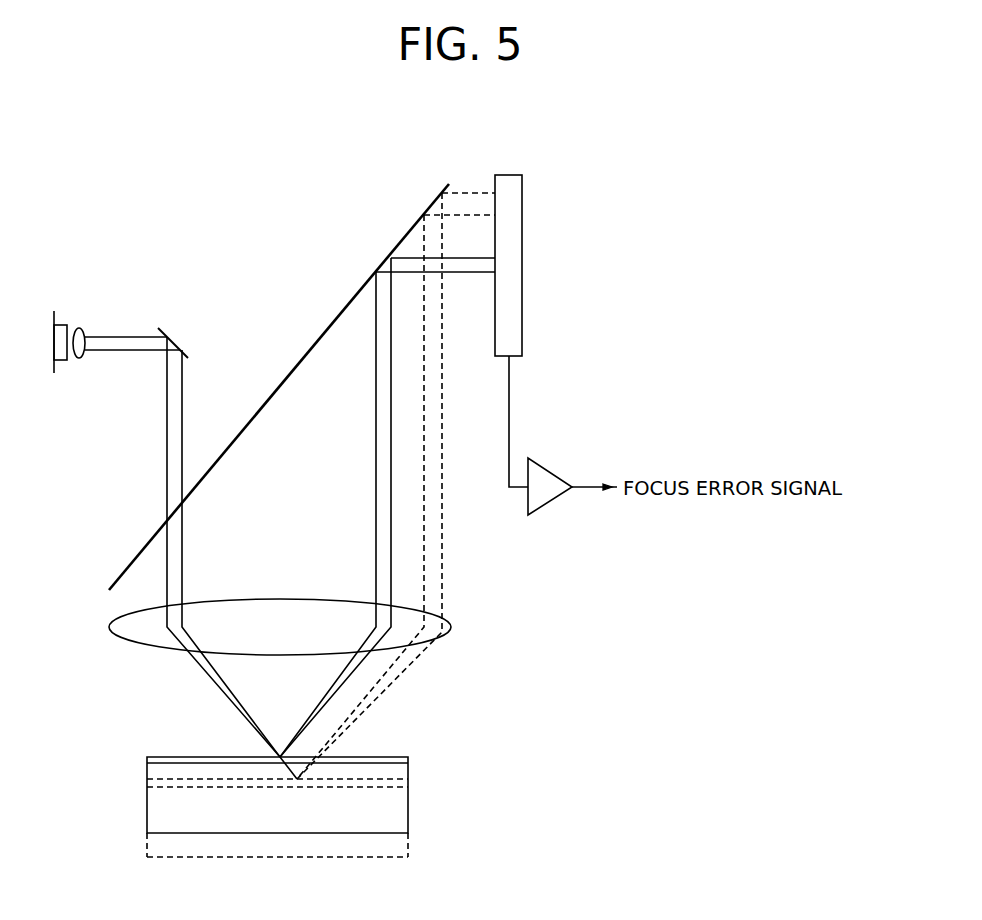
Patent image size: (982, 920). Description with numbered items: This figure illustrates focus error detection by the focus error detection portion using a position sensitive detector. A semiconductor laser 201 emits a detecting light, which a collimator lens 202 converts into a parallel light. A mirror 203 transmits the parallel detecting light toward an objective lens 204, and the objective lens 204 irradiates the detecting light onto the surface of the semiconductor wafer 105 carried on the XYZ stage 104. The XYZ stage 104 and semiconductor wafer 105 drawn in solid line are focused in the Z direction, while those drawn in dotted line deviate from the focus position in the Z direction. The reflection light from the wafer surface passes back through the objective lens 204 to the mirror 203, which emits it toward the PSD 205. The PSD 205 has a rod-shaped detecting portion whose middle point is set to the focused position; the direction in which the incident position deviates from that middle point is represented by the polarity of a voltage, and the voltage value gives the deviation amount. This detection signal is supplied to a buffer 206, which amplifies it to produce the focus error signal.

The XYZ stage 104 is at (152, 773).
The semiconductor wafer 105 is at (398, 762).
The semiconductor laser 201 is at (58, 362).
The collimator lens 202 is at (75, 330).
The mirror 203 is at (128, 563).
The objective lens 204 is at (130, 640).
The PSD 205 is at (523, 243).
The buffer 206 is at (545, 465).